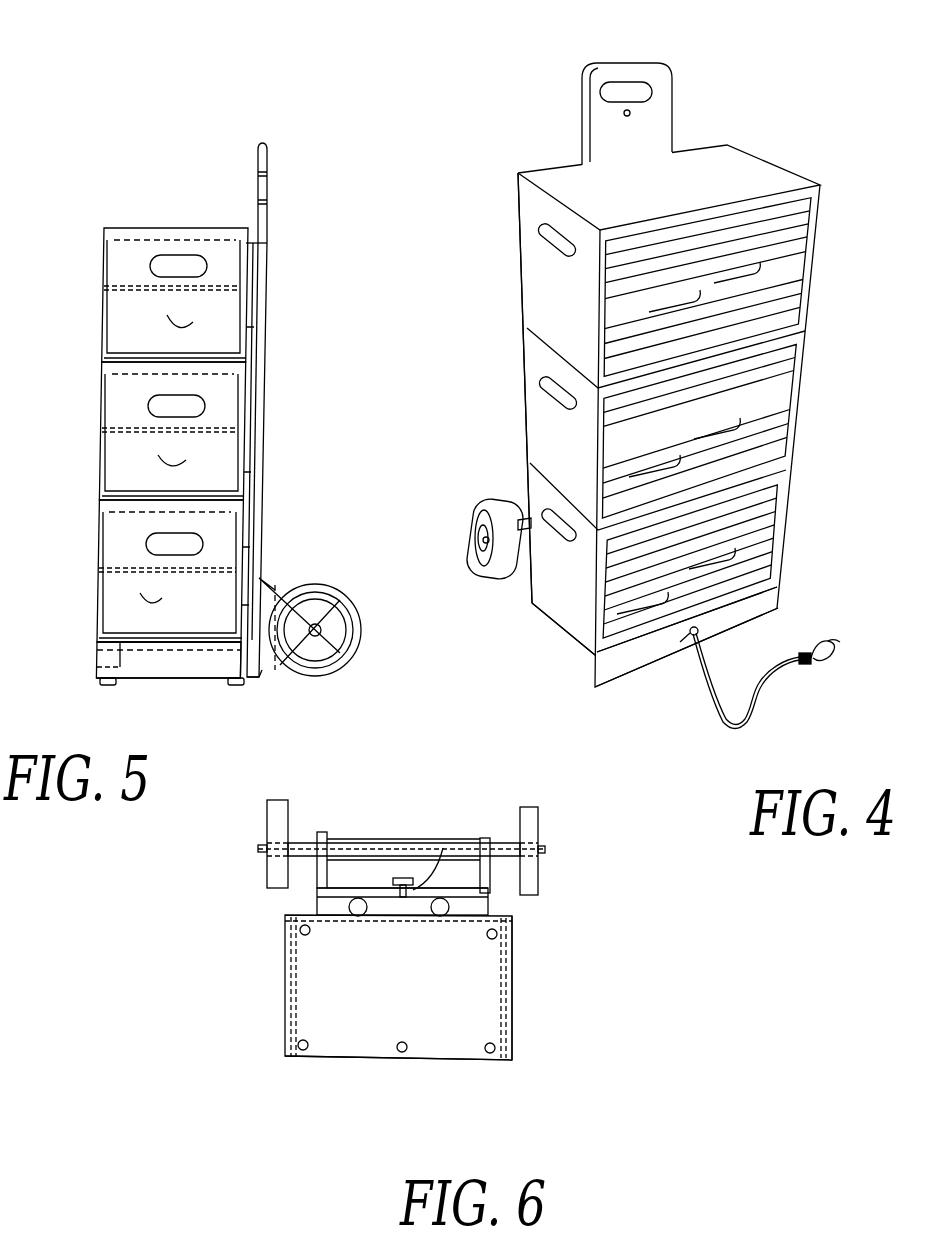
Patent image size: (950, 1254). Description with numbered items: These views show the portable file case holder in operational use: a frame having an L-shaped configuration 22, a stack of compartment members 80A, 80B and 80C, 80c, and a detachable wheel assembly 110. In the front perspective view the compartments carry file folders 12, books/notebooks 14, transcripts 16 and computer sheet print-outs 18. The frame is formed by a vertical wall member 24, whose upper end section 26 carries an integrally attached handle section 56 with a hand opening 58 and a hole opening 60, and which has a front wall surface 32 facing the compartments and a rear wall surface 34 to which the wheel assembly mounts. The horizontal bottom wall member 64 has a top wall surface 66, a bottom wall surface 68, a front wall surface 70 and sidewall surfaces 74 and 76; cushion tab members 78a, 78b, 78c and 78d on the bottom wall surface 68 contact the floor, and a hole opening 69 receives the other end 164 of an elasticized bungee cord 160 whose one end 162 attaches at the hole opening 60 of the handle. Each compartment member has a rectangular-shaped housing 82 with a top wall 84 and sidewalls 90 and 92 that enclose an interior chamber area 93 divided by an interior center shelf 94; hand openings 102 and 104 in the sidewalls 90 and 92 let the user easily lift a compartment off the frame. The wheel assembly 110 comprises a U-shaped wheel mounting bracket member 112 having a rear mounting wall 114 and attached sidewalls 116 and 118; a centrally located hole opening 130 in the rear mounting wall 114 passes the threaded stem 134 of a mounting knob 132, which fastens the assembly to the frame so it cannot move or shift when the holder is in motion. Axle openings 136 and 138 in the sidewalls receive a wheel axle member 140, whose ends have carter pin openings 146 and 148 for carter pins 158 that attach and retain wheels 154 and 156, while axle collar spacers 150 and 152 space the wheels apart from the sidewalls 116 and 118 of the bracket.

In FIG. 4, the file folders 12 is at (793, 227).
In FIG. 4, the books/notebooks 14 is at (790, 318).
In FIG. 4, the transcripts 16 is at (770, 382).
In FIG. 4, the computer sheet print-outs 18 is at (767, 520).
In FIG. 5, the L-shaped configuration 22 is at (265, 562).
In FIG. 5, the vertical wall member 24 is at (272, 304).
In FIG. 6, the vertical wall member 24 is at (316, 905).
In FIG. 6, the upper end section 26 is at (283, 970).
In FIG. 5, the front wall surface 32 is at (253, 243).
In FIG. 5, the rear wall surface 34 is at (268, 258).
In FIG. 5, the handle section 56 is at (262, 143).
In FIG. 4, the handle section 56 is at (643, 62).
In FIG. 5, the hand opening 58 is at (268, 176).
In FIG. 4, the hand opening 58 is at (647, 90).
In FIG. 5, the hole opening 60 is at (268, 197).
In FIG. 4, the hole opening 60 is at (630, 114).
In FIG. 5, the horizontal bottom wall member 64 is at (142, 683).
In FIG. 4, the horizontal bottom wall member 64 is at (783, 592).
In FIG. 6, the horizontal bottom wall member 64 is at (512, 977).
In FIG. 5, the top wall surface 66 is at (125, 645).
In FIG. 5, the bottom wall surface 68 is at (181, 686).
In FIG. 6, the bottom wall surface 68 is at (372, 995).
In FIG. 6, the hole opening 69 is at (398, 1052).
In FIG. 5, the front wall surface 70 is at (108, 658).
In FIG. 4, the front wall surface 70 is at (608, 668).
In FIG. 6, the front wall surface 70 is at (450, 1060).
In FIG. 5, the sidewall surface 74 is at (208, 662).
In FIG. 6, the sidewall surface 74 is at (285, 1017).
In FIG. 4, the sidewall surface 76 is at (567, 632).
In FIG. 6, the sidewall surface 76 is at (512, 1028).
In FIG. 5, the cushion tab member 78a is at (110, 687).
In FIG. 6, the cushion tab member 78a is at (300, 1052).
In FIG. 5, the cushion tab member 78b is at (236, 686).
In FIG. 6, the cushion tab member 78b is at (310, 935).
In FIG. 6, the cushion tab member 78c is at (498, 935).
In FIG. 6, the cushion tab member 78d is at (493, 1052).
In FIG. 5, the compartment member 80A is at (102, 320).
In FIG. 4, the compartment member 80A is at (757, 147).
In FIG. 5, the compartment member 80B is at (194, 405).
In FIG. 4, the compartment member 80B is at (803, 416).
In FIG. 4, the compartment member 80C is at (785, 546).
In FIG. 5, the compartment member 80c is at (192, 546).
In FIG. 4, the rectangular-shaped housing 82 is at (770, 183).
In FIG. 4, the top wall 84 is at (702, 170).
In FIG. 5, the sidewall 90 is at (195, 325).
In FIG. 4, the sidewall 92 is at (576, 280).
In FIG. 5, the interior chamber area 93 is at (125, 246).
In FIG. 5, the interior center shelf 94 is at (104, 290).
In FIG. 5, the hand opening 102 is at (196, 265).
In FIG. 4, the hand opening 104 is at (545, 242).
In FIG. 5, the detachable wheel assembly 110 is at (325, 690).
In FIG. 6, the detachable wheel assembly 110 is at (390, 852).
In FIG. 5, the U-shaped wheel mounting bracket member 112 is at (270, 582).
In FIG. 6, the U-shaped wheel mounting bracket member 112 is at (336, 872).
In FIG. 5, the rear mounting wall 114 is at (265, 677).
In FIG. 6, the rear mounting wall 114 is at (440, 895).
In FIG. 5, the sidewall 116 is at (280, 665).
In FIG. 6, the sidewall 116 is at (317, 833).
In FIG. 6, the sidewall 118 is at (482, 840).
In FIG. 6, the hole opening 130 is at (395, 885).
In FIG. 6, the mounting knob 132 is at (403, 878).
In FIG. 6, the threaded stem 134 is at (445, 858).
In FIG. 6, the axle opening 136 is at (310, 853).
In FIG. 6, the axle opening 138 is at (490, 858).
In FIG. 5, the wheel axle member 140 is at (326, 607).
In FIG. 6, the wheel axle member 140 is at (355, 841).
In FIG. 6, the carter pin opening 146 is at (272, 842).
In FIG. 6, the carter pin opening 148 is at (535, 845).
In FIG. 5, the axle collar spacer 150 is at (321, 633).
In FIG. 4, the axle collar spacer 150 is at (523, 517).
In FIG. 6, the axle collar spacer 150 is at (288, 838).
In FIG. 6, the axle collar spacer 152 is at (505, 843).
In FIG. 5, the wheel 154 is at (323, 585).
In FIG. 6, the wheel 154 is at (275, 812).
In FIG. 4, the wheel 156 is at (487, 542).
In FIG. 6, the wheel 156 is at (532, 812).
In FIG. 6, the carter pins 158 is at (265, 850).
In FIG. 4, the elasticized (bungee) cord 160 is at (758, 688).
In FIG. 4, the one end 162 is at (832, 643).
In FIG. 4, the other end 164 is at (692, 634).